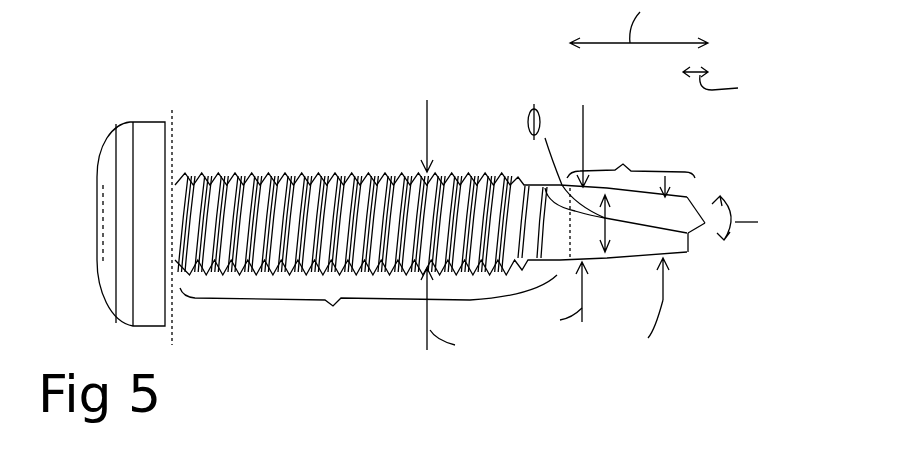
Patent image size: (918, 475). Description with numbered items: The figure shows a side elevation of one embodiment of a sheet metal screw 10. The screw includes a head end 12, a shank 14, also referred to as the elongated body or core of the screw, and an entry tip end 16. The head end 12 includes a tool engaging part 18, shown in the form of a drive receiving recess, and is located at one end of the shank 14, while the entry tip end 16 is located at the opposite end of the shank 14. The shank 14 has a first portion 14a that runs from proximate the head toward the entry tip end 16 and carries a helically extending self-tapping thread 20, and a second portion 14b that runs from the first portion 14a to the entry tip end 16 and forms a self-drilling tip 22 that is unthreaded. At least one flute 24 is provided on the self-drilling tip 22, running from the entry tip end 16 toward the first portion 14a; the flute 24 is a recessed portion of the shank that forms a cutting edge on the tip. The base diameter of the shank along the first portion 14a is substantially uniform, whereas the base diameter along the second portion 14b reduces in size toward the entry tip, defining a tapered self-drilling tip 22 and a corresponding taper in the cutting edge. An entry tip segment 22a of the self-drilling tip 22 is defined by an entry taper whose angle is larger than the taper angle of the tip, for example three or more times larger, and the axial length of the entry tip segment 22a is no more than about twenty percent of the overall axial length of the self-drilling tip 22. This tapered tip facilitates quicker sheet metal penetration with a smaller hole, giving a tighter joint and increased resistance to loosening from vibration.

The sheet metal screw 10 is at (461, 105).
The head end 12 is at (140, 100).
The shank 14 is at (263, 180).
The first portion 14a is at (368, 313).
The second portion 14b is at (631, 158).
The entry tip end 16 is at (699, 257).
The tool engaging part 18 is at (101, 211).
The self-tapping thread 20 is at (212, 176).
The self-drilling tip 22 is at (669, 152).
The entry tip segment 22a is at (700, 235).
The flute 24 is at (663, 212).